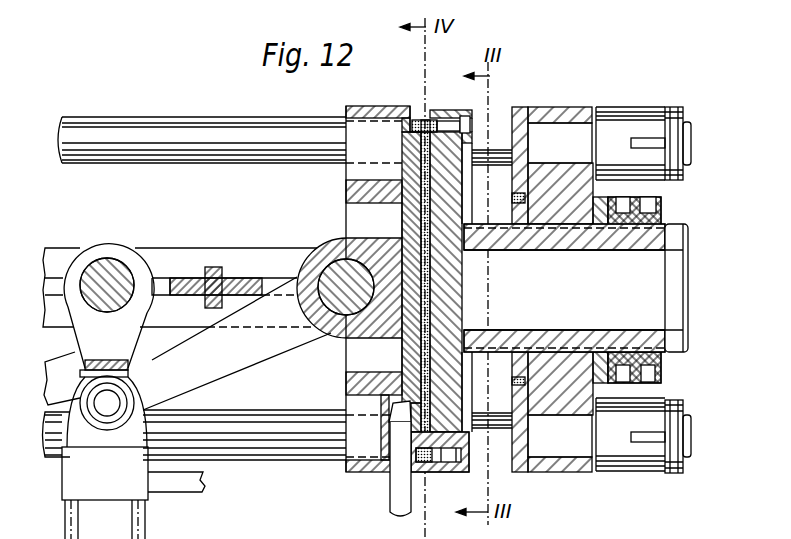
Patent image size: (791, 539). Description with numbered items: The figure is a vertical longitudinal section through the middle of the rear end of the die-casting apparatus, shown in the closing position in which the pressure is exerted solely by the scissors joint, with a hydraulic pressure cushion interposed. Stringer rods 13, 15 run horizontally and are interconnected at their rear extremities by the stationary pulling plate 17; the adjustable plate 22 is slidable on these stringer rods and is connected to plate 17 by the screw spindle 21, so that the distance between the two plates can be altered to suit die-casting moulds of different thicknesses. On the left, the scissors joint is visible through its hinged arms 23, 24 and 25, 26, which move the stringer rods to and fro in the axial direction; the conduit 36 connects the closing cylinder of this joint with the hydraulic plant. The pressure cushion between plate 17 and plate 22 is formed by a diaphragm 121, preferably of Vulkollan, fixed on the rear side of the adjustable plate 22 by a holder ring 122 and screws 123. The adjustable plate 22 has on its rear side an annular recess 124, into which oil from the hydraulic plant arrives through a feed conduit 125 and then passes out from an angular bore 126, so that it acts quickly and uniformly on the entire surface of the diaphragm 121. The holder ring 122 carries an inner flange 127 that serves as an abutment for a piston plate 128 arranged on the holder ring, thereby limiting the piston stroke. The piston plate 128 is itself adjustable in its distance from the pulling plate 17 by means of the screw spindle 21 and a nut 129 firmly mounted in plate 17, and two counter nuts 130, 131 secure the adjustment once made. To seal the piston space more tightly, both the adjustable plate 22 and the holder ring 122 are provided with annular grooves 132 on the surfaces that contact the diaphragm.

The stringer rod 13 is at (172, 128).
The stringer rod 15 is at (248, 462).
The plate 17 is at (562, 108).
The screw spindle 21 is at (657, 343).
The adjustable plate 22 is at (351, 383).
The hinged arm 23 is at (62, 250).
The hinged arm 24 is at (181, 250).
The hinged arm 25 is at (66, 360).
The hinged arm 26 is at (224, 374).
The conduit 36 is at (182, 486).
The diaphragm 121 is at (427, 230).
The holder ring 122 is at (457, 96).
The screws 123 is at (466, 122).
The annular recess 124 is at (405, 150).
The feed conduit 125 is at (394, 507).
The angular bore 126 is at (411, 422).
The inner flange 127 is at (471, 447).
The piston plate 128 is at (452, 470).
The nut 129 is at (543, 352).
The counter nut 130 is at (660, 200).
The counter nut 131 is at (658, 218).
The annular grooves 132 is at (425, 118).